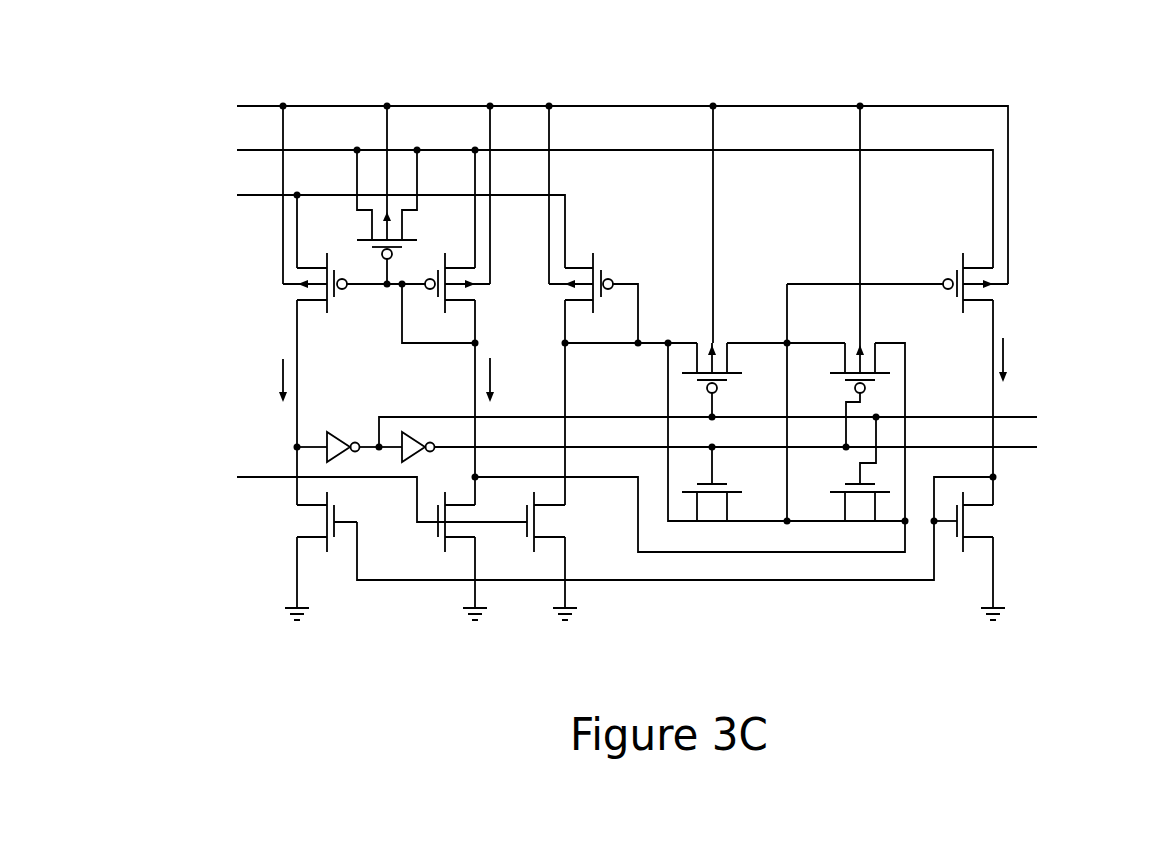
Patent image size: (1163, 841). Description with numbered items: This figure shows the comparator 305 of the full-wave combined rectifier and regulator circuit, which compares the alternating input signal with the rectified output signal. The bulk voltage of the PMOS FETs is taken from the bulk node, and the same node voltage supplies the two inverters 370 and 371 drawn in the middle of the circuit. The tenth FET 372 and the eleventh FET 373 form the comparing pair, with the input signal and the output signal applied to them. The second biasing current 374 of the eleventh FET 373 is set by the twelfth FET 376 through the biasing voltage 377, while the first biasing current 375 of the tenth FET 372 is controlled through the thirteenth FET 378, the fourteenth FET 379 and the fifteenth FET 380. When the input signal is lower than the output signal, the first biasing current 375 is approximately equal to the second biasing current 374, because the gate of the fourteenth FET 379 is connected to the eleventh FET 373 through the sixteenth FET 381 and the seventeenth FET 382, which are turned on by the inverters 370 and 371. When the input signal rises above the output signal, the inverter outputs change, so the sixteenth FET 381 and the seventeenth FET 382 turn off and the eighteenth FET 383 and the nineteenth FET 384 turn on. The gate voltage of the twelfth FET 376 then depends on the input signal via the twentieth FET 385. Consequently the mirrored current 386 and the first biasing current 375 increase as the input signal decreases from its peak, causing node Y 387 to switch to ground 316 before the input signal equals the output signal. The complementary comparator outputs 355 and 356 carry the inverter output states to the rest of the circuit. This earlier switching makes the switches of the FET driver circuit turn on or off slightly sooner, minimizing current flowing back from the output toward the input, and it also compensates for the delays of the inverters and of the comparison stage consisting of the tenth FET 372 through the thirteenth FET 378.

The comparator CO1 305 is at (581, 342).
The FET M10 372 is at (260, 275).
The FET M11 373 is at (514, 280).
The FET M20 385 is at (650, 255).
The FET M18 383 is at (735, 313).
The FET M16 381 is at (900, 326).
The FET M14 379 is at (1034, 274).
The biasing current I13 375 is at (260, 369).
The biasing current I12 374 is at (520, 367).
The current I14 386 is at (1036, 353).
The inverter 370 is at (334, 432).
The inverter 371 is at (414, 453).
The node Y 387 is at (258, 441).
The biasing voltage Vb 377 is at (215, 488).
The FET M13 378 is at (275, 531).
The FET M12 376 is at (392, 544).
The FET M19 384 is at (735, 538).
The FET M17 382 is at (879, 538).
The FET M15 380 is at (1020, 534).
The ground 316 is at (312, 609).
The output Cout 355 is at (1093, 418).
The complementary output Coutb 356 is at (1103, 452).